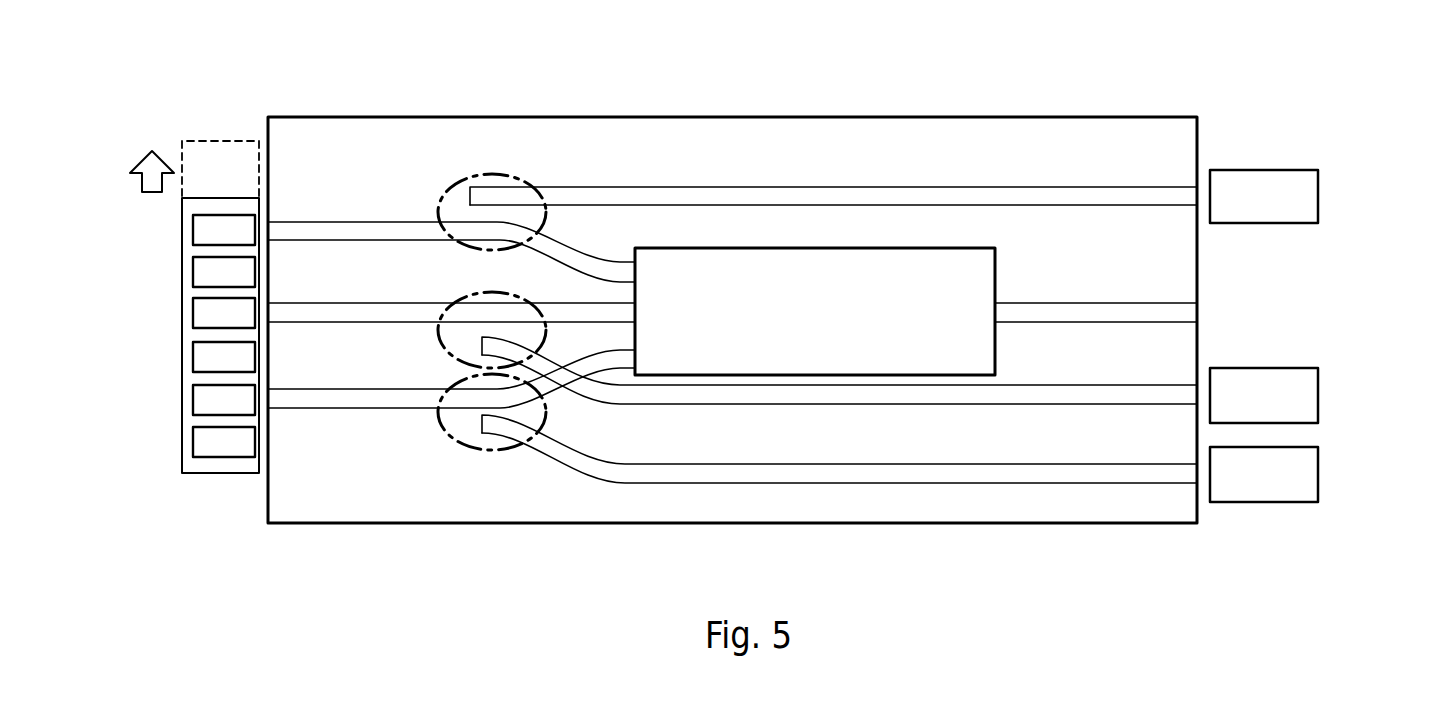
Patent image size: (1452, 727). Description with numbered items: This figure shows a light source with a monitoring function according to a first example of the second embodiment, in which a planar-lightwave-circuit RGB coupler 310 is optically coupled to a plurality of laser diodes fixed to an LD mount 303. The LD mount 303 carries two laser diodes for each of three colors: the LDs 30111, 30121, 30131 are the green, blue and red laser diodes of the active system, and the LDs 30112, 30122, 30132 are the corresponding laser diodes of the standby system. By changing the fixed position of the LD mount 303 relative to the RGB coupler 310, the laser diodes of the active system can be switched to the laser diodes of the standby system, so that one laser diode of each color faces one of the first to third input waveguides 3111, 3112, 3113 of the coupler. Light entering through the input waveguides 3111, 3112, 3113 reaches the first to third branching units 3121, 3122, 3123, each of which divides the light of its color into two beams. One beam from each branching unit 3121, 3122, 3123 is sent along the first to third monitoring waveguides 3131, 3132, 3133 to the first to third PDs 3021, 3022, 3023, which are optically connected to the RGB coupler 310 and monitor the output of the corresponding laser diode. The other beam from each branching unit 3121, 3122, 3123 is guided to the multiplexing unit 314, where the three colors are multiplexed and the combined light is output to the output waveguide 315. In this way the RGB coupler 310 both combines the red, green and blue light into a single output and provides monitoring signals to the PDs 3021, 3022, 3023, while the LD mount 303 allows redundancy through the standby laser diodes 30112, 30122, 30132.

The LD of the active system 30111 is at (193, 232).
The LD of the standby system 30112 is at (193, 274).
The LD of the active system 30121 is at (193, 315).
The LD of the standby system 30122 is at (193, 357).
The LD of the active system 30131 is at (193, 402).
The LD of the standby system 30132 is at (193, 444).
The LD mount 303 is at (222, 473).
The RGB coupler 310 is at (1025, 117).
The first input waveguide 3111 is at (380, 228).
The second input waveguide 3112 is at (380, 308).
The third input waveguide 3113 is at (380, 397).
The first branching unit 3121 is at (468, 168).
The second branching unit 3122 is at (468, 291).
The third branching unit 3123 is at (472, 450).
The first monitoring waveguide 3131 is at (1060, 193).
The second monitoring waveguide 3132 is at (1060, 393).
The third monitoring waveguide 3133 is at (1060, 471).
The multiplexing unit 314 is at (923, 248).
The output waveguide 315 is at (1060, 308).
The first PD 3021 is at (1318, 195).
The second PD 3022 is at (1318, 395).
The third PD 3023 is at (1318, 474).